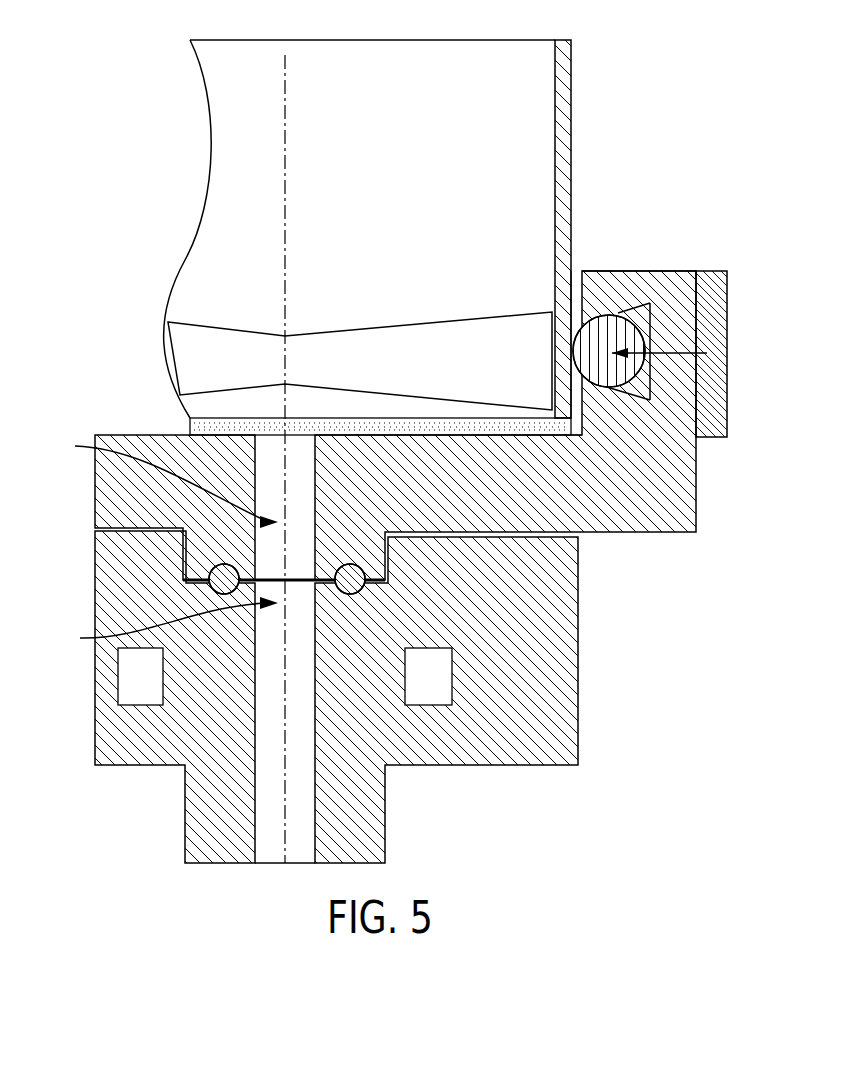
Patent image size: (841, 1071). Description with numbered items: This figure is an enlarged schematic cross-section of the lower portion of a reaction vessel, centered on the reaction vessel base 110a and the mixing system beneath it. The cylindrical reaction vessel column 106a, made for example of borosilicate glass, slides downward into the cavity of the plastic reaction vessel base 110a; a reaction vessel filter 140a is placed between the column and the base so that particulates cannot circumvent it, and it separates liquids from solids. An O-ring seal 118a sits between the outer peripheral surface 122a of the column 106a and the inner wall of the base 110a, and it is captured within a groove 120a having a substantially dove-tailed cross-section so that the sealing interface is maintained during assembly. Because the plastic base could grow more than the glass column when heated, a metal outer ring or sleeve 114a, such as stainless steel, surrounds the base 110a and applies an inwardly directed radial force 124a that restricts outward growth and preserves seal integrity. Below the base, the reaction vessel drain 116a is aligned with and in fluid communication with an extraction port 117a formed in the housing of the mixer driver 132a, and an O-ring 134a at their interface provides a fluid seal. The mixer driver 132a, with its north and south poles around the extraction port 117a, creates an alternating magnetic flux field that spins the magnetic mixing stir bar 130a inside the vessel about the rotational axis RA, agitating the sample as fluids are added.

The reaction vessel column 106a is at (563, 107).
The reaction vessel base 110a is at (677, 497).
The outer ring or sleeve 114a is at (713, 310).
The reaction vessel drain 116a is at (154, 480).
The extraction port 117a is at (155, 626).
The O-ring seal 118a is at (602, 325).
The groove 120a is at (650, 302).
The outer peripheral surface 122a is at (576, 350).
The inwardly directed radial force 124a is at (664, 355).
The mixing stir bar 130a is at (373, 338).
The mixer driver 132a is at (563, 605).
The O-ring 134a is at (350, 595).
The reaction vessel filter 140a is at (243, 423).
The rotation axis RA is at (287, 145).